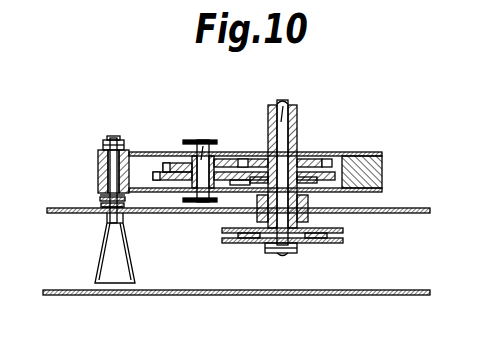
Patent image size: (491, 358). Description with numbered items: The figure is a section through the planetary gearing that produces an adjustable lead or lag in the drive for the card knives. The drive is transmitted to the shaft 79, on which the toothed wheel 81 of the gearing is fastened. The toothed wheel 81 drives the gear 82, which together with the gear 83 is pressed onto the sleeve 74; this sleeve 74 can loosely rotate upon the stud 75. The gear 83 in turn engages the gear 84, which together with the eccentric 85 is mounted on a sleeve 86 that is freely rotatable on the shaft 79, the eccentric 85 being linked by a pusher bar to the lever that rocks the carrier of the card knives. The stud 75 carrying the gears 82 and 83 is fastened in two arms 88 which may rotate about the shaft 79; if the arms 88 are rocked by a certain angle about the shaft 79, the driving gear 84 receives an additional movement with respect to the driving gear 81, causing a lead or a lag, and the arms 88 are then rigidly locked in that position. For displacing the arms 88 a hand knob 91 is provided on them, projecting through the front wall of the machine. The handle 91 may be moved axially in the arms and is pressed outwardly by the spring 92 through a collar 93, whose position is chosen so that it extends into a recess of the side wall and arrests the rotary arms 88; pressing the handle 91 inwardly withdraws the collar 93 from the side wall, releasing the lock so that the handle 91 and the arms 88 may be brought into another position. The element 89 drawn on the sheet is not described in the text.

The sleeve 74 is at (183, 148).
The stud 75 is at (205, 147).
The shaft 79 is at (285, 110).
The toothed wheel 81 is at (331, 157).
The gear 82 is at (173, 165).
The gear 83 is at (175, 177).
The gear 84 is at (328, 190).
The eccentric 85 is at (308, 243).
The sleeve 86 is at (250, 243).
The arms 88 is at (383, 172).
The sleeve 89 is at (295, 132).
The hand knob 91 is at (113, 270).
The spring 92 is at (105, 200).
The collar 93 is at (65, 213).